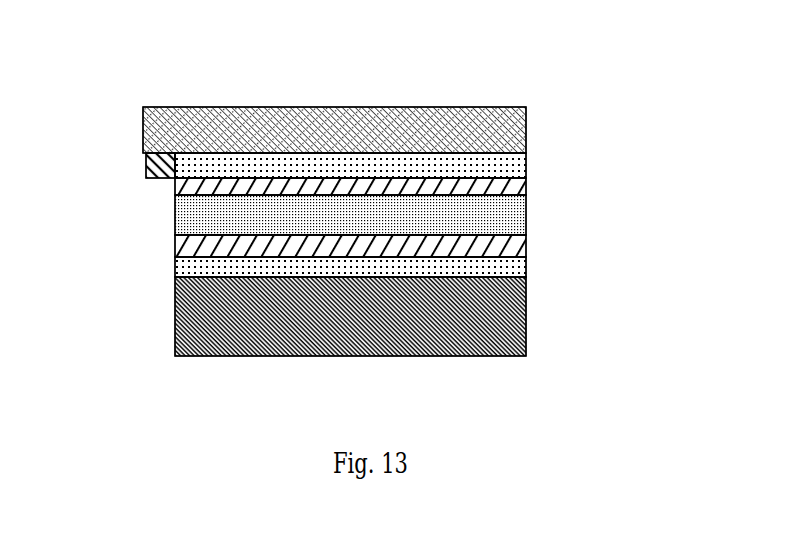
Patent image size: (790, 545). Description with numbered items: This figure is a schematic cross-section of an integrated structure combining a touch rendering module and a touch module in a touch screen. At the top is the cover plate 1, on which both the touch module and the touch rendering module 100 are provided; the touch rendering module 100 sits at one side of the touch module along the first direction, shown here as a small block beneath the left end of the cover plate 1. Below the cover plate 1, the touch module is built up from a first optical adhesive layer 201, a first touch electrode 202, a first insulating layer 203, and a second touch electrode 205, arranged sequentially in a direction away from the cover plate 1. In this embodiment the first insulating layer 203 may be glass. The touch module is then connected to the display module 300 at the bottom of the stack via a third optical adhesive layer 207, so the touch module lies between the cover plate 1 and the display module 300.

The cover plate 1 is at (395, 107).
The touch rendering module 100 is at (145, 177).
The first optical adhesive layer 201 is at (527, 162).
The first touch electrode 202 is at (527, 183).
The first insulating layer 203 is at (527, 212).
The second touch electrode 205 is at (527, 250).
The third optical adhesive layer 207 is at (527, 270).
The display module 300 is at (192, 355).